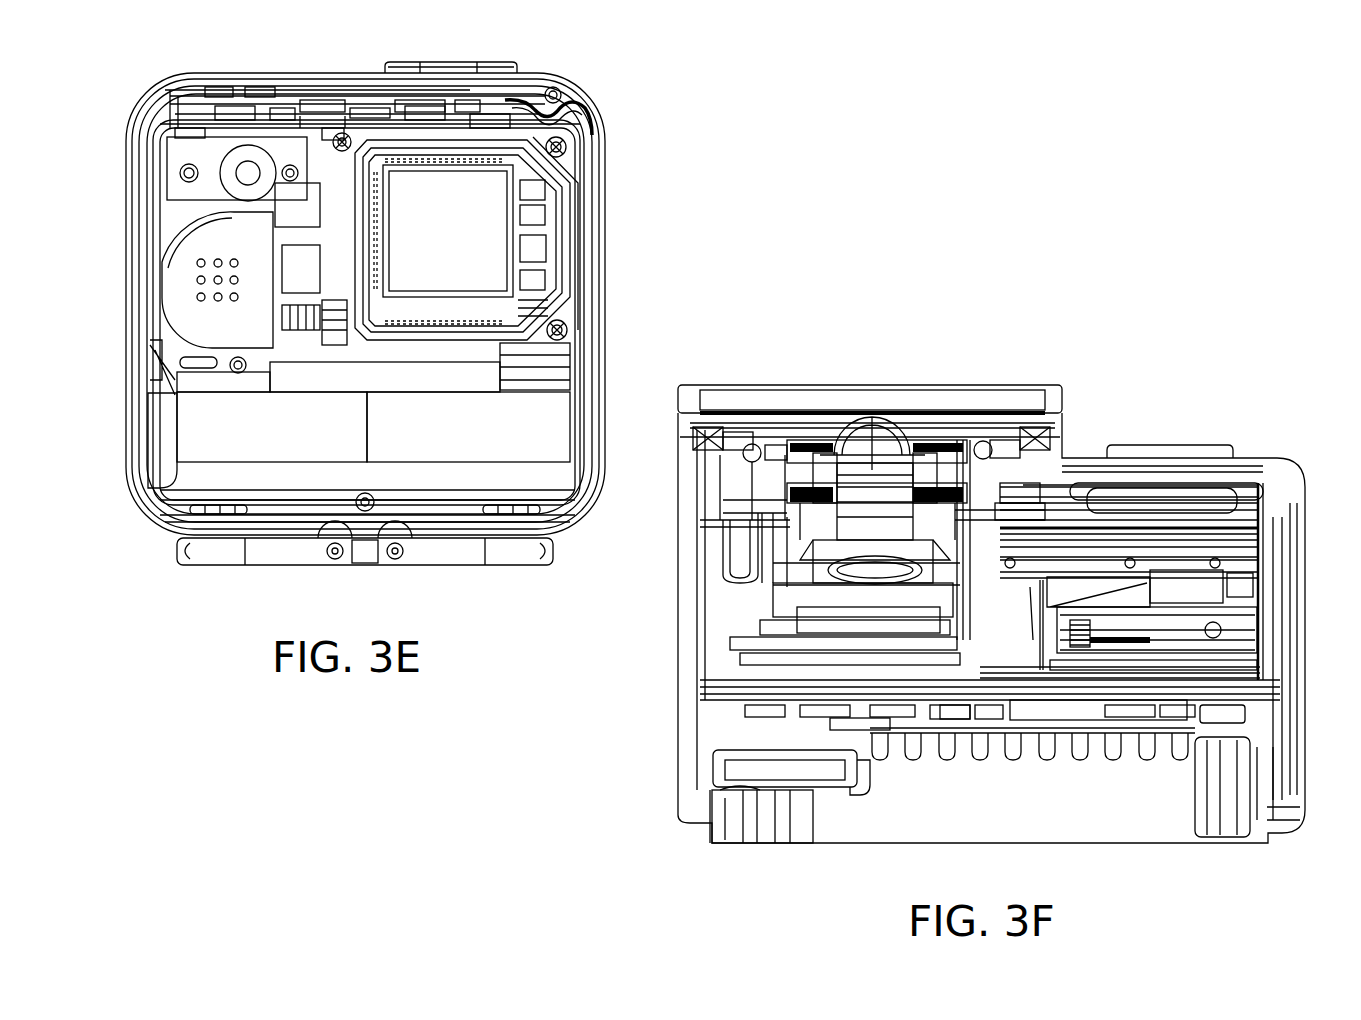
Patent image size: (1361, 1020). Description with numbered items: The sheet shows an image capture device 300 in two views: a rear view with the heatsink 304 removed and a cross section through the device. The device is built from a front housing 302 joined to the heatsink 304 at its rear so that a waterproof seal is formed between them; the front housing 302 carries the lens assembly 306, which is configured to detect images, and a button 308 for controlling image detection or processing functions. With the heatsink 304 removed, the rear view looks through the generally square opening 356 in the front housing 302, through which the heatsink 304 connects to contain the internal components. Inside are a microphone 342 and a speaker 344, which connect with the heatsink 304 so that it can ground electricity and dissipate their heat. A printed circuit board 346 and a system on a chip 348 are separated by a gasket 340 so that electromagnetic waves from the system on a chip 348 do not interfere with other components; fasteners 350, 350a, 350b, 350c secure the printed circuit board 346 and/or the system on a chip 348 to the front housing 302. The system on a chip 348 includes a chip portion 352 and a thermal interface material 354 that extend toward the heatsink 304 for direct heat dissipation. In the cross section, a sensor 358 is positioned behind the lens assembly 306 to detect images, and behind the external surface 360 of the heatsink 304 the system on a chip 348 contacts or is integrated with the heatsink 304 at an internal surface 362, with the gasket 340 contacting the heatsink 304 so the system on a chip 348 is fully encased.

In FIG. 3E, the image capture device 300 is at (708, 94).
In FIG. 3F, the image capture device 300 is at (1222, 352).
In FIG. 3E, the front housing 302 is at (566, 74).
In FIG. 3F, the front housing 302 is at (1258, 448).
In FIG. 3F, the heatsink 304 is at (750, 857).
In FIG. 3F, the lens assembly 306 is at (947, 385).
In FIG. 3E, the button 308 is at (441, 62).
In FIG. 3E, the gasket 340 is at (500, 135).
In FIG. 3F, the gasket 340 is at (983, 720).
In FIG. 3E, the microphone 342 is at (228, 160).
In FIG. 3E, the speaker 344 is at (140, 257).
In FIG. 3E, the printed circuit board 346 is at (333, 138).
In FIG. 3F, the printed circuit board 346 is at (955, 730).
In FIG. 3E, the system on a chip 348 is at (556, 252).
In FIG. 3F, the system on a chip 348 is at (1128, 745).
In FIG. 3F, the fastener 350 is at (1070, 722).
In FIG. 3E, the fastener 350a is at (564, 156).
In FIG. 3E, the fastener 350b is at (566, 329).
In FIG. 3E, the fastener 350c is at (352, 136).
In FIG. 3E, the chip portion 352 is at (518, 214).
In FIG. 3E, the thermal interface material 354 is at (518, 281).
In FIG. 3F, the thermal interface material 354 is at (1162, 740).
In FIG. 3E, the opening 356 is at (135, 427).
In FIG. 3F, the sensor 358 is at (760, 600).
In FIG. 3F, the external surface 360 is at (862, 847).
In FIG. 3F, the internal surface 362 is at (1213, 720).